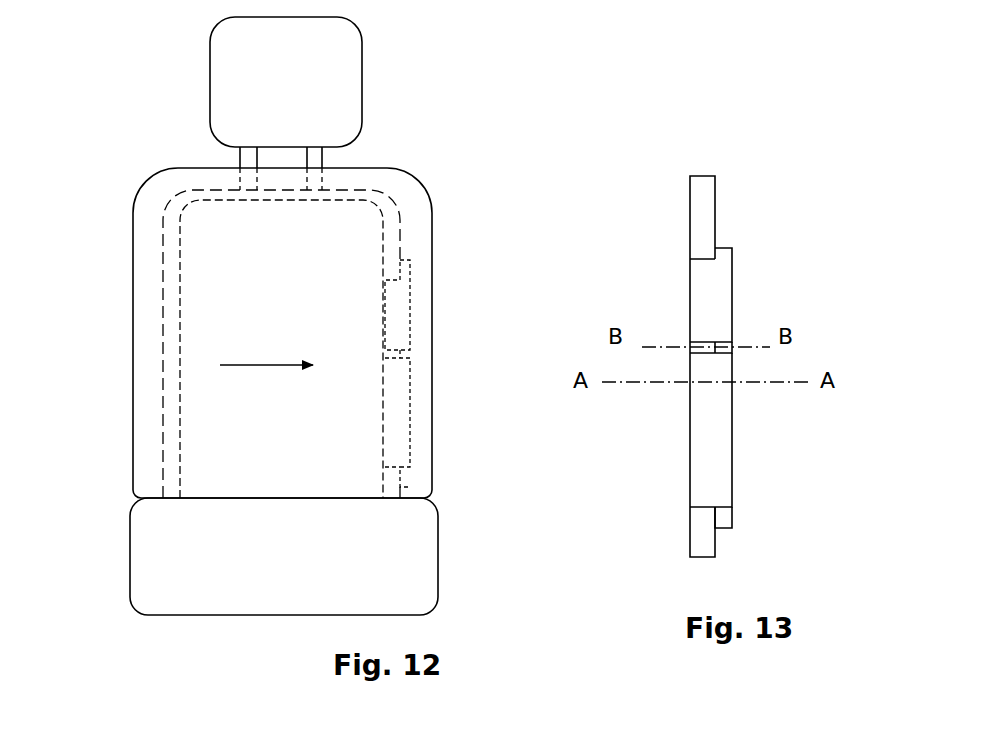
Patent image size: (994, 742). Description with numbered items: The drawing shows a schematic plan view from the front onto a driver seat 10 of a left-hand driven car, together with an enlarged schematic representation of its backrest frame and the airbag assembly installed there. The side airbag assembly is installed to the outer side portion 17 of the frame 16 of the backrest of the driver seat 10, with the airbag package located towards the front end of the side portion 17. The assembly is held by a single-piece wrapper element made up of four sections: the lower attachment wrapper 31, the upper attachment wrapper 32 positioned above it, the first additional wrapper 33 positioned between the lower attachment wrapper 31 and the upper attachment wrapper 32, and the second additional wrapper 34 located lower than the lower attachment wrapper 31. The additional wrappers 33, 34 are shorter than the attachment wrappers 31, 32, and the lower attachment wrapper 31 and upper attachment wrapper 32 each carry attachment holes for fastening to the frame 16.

In FIG. 12, the driver seat 10 is at (142, 137).
In FIG. 12, the frame 16 is at (300, 192).
In FIG. 12, the outer side portion 17 is at (392, 245).
In FIG. 13, the outer side portion 17 is at (705, 217).
In FIG. 12, the lower attachment wrapper 31 is at (398, 428).
In FIG. 13, the lower attachment wrapper 31 is at (720, 485).
In FIG. 12, the upper attachment wrapper 32 is at (399, 316).
In FIG. 13, the upper attachment wrapper 32 is at (723, 267).
In FIG. 13, the first additional wrapper 33 is at (726, 342).
In FIG. 13, the second additional wrapper 34 is at (727, 513).